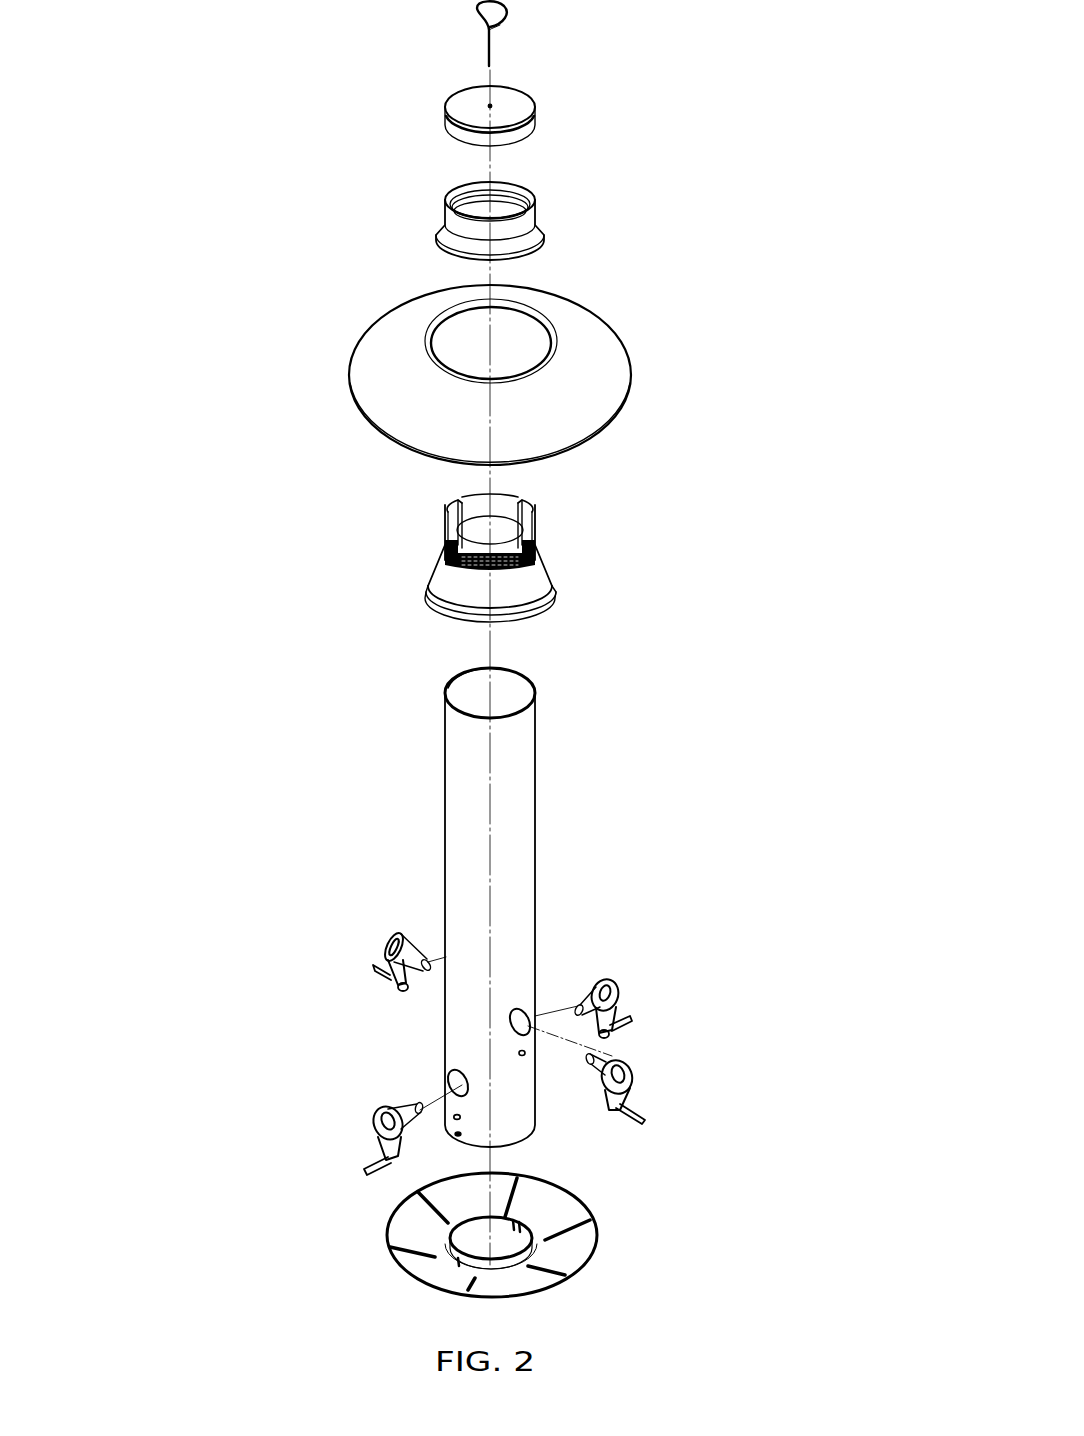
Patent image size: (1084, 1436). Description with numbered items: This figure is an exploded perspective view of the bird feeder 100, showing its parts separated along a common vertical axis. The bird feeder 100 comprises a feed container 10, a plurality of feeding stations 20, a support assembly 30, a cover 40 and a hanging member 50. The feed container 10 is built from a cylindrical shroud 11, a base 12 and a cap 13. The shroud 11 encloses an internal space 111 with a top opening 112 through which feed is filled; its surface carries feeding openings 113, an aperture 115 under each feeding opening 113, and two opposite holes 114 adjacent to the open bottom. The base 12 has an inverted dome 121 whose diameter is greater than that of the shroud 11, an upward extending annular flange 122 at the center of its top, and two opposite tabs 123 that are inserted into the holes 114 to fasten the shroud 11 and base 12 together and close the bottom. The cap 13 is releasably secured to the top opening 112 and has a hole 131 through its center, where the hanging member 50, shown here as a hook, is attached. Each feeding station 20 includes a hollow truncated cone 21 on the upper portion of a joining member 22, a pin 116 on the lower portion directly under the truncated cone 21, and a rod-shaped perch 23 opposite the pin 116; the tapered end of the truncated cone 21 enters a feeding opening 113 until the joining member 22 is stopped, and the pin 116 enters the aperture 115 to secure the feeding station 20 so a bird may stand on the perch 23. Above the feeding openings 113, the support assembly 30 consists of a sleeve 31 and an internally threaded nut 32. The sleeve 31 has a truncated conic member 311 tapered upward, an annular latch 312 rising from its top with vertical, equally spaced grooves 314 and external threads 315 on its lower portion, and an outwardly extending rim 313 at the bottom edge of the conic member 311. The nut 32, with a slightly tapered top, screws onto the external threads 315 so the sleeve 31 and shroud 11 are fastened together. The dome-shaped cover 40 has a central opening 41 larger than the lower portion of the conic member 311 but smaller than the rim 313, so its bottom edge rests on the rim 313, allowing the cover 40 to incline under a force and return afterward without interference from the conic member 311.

The bird feeder 100 is at (172, 138).
The feed container 10 is at (316, 837).
The cylindrical shroud 11 is at (470, 768).
The internal space 111 is at (462, 682).
The top opening 112 is at (532, 674).
The feeding openings 113 is at (522, 1009).
The holes 114 is at (452, 1140).
The apertures 115 is at (462, 1118).
The pin 116 is at (407, 989).
The base 12 is at (600, 1230).
The inverted dome 121 is at (520, 1280).
The annular flange 122 is at (450, 1232).
The tabs 123 is at (480, 1262).
The cap 13 is at (458, 113).
The hole 131 is at (490, 106).
The feeding stations 20 is at (350, 944).
The truncated cone 21 is at (612, 1058).
The joining member 22 is at (620, 1093).
The perch 23 is at (632, 1122).
The support assembly 30 is at (834, 480).
The sleeve 31 is at (728, 536).
The truncated conic member 311 is at (523, 588).
The annular latch 312 is at (535, 526).
The rim 313 is at (540, 602).
The grooves 314 is at (456, 503).
The external threads 315 is at (442, 550).
The nut 32 is at (534, 233).
The cover 40 is at (595, 368).
The central opening 41 is at (430, 340).
The hanging member 50 is at (502, 24).